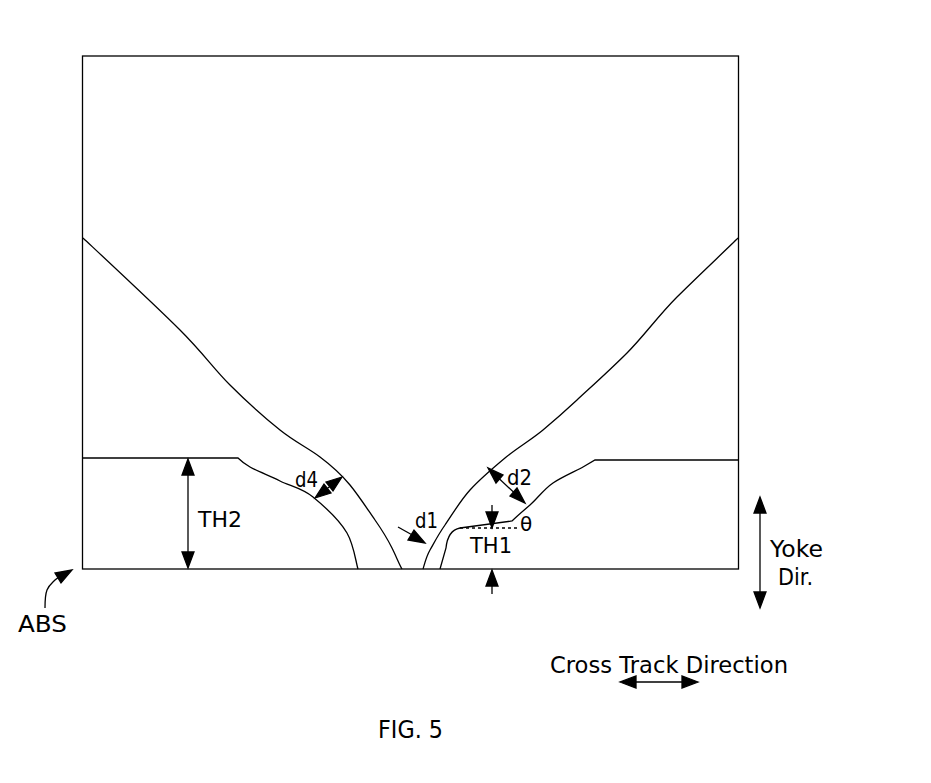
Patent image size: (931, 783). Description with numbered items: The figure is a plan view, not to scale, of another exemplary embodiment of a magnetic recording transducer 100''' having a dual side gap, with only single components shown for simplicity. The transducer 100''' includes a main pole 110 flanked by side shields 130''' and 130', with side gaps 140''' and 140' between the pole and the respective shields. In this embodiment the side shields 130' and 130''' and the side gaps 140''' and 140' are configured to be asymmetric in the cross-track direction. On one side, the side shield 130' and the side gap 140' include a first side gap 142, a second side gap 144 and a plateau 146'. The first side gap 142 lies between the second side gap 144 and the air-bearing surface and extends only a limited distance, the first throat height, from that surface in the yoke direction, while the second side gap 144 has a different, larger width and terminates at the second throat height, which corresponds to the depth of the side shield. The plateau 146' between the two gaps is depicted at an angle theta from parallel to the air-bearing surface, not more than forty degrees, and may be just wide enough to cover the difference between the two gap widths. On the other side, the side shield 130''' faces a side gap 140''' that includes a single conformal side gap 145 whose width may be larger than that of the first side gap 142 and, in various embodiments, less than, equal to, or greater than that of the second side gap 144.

The magnetic recording transducer 100''' is at (411, 290).
The main pole 110 is at (410, 403).
The side shield 130''' is at (220, 513).
The side shield 130' is at (589, 514).
The side gap 140''' is at (120, 336).
The side gap 140' is at (698, 320).
The first side gap 142 is at (428, 579).
The second side gap 144 is at (558, 451).
The single conformal side gap 145 is at (273, 464).
The plateau 146' is at (567, 567).